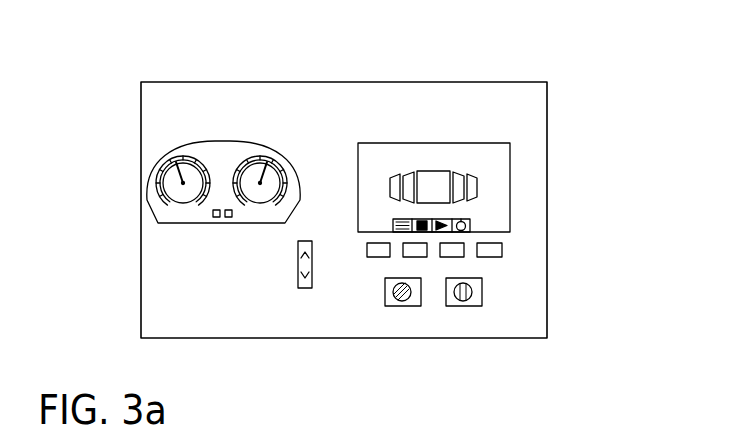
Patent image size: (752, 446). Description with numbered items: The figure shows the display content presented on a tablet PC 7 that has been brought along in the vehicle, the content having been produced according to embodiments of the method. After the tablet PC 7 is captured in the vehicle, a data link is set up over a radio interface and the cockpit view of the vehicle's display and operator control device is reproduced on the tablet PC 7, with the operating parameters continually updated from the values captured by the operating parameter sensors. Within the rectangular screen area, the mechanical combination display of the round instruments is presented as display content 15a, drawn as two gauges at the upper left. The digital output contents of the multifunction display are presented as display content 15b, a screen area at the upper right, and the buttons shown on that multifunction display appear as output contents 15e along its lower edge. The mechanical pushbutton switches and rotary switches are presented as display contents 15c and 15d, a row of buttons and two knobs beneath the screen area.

The tablet PC 7 is at (547, 117).
The display content 15a is at (155, 201).
The display content 15b is at (452, 158).
The display content 15c is at (457, 251).
The display content 15d is at (462, 296).
The output contents 15e is at (447, 220).